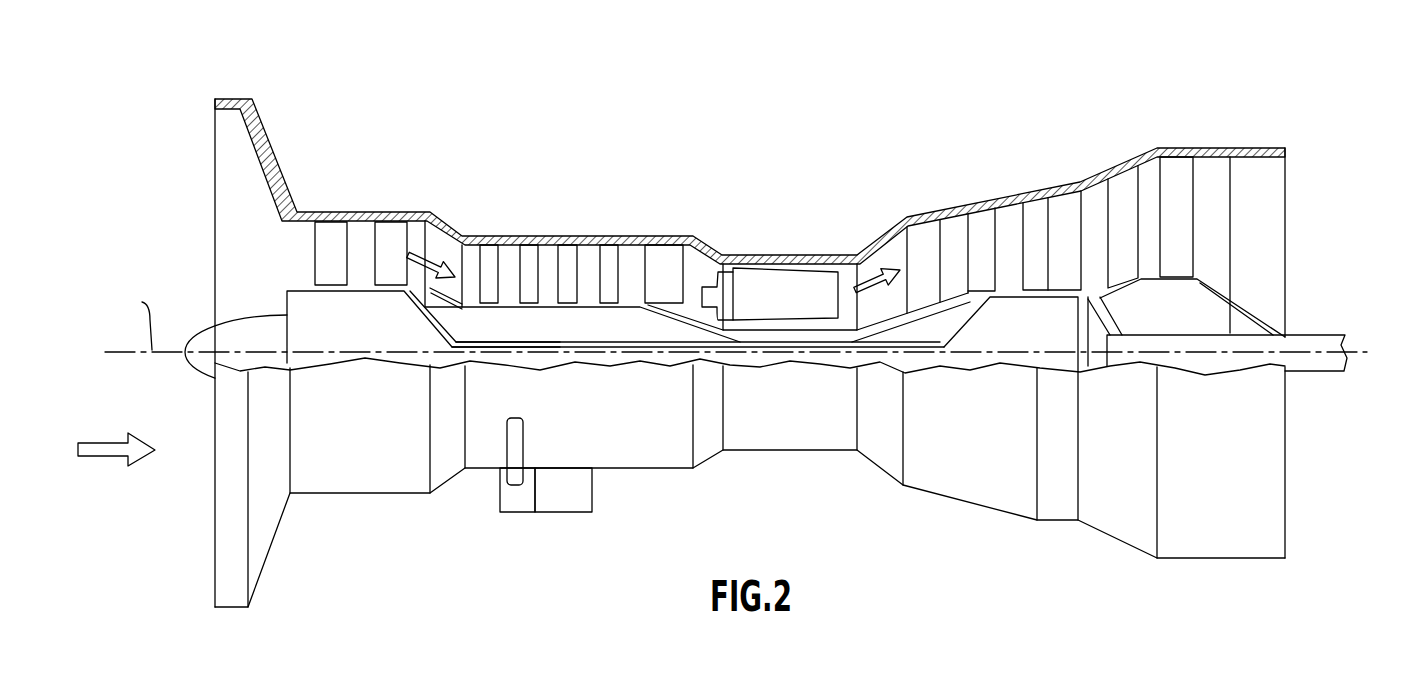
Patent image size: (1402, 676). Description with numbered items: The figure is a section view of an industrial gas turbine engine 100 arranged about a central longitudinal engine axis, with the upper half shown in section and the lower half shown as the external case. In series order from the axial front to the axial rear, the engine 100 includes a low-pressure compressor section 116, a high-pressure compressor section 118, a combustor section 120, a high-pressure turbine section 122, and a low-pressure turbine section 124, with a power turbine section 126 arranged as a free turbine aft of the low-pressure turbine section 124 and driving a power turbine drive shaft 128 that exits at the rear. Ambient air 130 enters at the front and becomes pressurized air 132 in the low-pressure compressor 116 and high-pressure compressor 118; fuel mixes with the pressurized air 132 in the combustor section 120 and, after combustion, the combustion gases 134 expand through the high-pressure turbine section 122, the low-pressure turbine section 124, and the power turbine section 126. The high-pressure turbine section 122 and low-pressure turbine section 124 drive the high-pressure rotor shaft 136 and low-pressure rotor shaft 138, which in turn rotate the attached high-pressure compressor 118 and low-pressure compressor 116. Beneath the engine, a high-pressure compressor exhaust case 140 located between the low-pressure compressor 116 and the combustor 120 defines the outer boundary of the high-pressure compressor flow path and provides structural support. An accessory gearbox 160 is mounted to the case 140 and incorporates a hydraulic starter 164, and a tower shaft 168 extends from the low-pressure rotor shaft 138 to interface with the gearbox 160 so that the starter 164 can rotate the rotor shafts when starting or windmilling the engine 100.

The gas turbine engine 100 is at (710, 319).
The low-pressure compressor section 116 is at (354, 190).
The high-pressure compressor section 118 is at (585, 220).
The combustor section 120 is at (752, 240).
The high-pressure turbine section 122 is at (959, 200).
The low-pressure turbine section 124 is at (1069, 160).
The power turbine section 126 is at (1228, 130).
The power turbine drive shaft 128 is at (1313, 336).
The ambient air 130 is at (108, 442).
The pressurized air 132 is at (436, 262).
The combustion gases 134 is at (801, 270).
The high-pressure rotor shaft 136 is at (677, 309).
The low-pressure rotor shaft 138 is at (447, 333).
The high-pressure compressor exhaust case 140 is at (485, 458).
The accessory gearbox 160 is at (513, 514).
The starter 164 is at (594, 490).
The tower shaft 168 is at (527, 437).